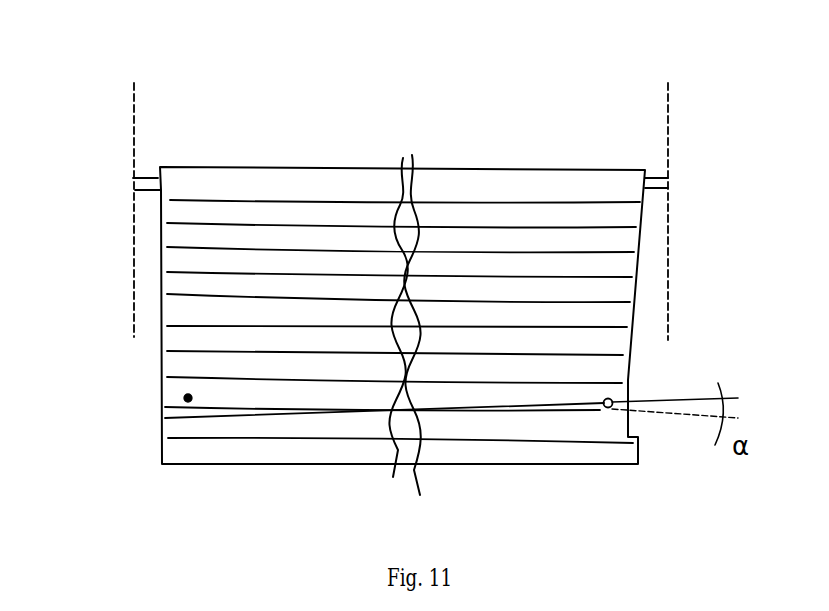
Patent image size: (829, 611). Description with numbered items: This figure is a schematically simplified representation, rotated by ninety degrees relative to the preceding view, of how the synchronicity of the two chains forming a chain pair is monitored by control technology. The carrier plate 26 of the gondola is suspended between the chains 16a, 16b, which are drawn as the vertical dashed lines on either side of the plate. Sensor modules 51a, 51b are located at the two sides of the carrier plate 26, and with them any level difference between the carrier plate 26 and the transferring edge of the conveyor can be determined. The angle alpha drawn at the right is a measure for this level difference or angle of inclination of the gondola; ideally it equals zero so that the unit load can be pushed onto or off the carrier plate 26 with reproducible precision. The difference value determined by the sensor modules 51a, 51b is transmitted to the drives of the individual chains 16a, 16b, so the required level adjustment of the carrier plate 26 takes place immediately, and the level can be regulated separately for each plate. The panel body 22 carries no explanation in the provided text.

The chain 16a is at (134, 100).
The chain 16b is at (668, 103).
The shade panel 22 is at (533, 170).
The carrier plate 26 is at (205, 438).
The sensor module 51a is at (614, 399).
The sensor module 51b is at (188, 398).